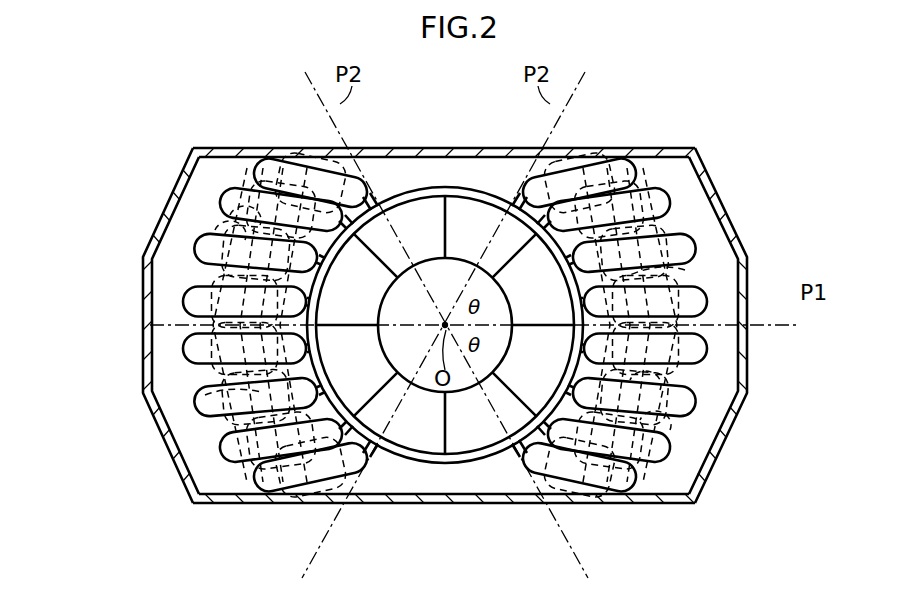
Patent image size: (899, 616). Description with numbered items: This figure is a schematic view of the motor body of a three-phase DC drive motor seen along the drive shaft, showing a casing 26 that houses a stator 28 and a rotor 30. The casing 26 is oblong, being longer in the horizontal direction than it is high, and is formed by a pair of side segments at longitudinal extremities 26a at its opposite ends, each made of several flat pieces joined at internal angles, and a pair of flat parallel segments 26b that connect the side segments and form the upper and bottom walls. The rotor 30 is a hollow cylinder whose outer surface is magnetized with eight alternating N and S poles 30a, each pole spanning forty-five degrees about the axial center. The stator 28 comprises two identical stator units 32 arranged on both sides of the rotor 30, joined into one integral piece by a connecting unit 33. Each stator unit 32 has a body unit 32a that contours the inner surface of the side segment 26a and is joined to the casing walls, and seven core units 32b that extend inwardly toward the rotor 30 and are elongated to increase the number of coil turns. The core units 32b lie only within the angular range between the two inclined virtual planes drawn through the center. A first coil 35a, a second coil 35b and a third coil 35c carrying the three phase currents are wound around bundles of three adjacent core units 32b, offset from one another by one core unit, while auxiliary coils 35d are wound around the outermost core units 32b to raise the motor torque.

The casing 26 is at (455, 326).
The side segment at longitudinal extremity 26a is at (175, 205).
The parallel segment 26b is at (612, 150).
The stator 28 is at (443, 321).
The rotor 30 is at (426, 188).
The pole 30a is at (390, 203).
The stator unit 32 is at (163, 345).
The body unit 32a is at (195, 218).
The core unit 32b is at (290, 288).
The connecting unit 33 is at (497, 482).
The first coil 35a is at (250, 418).
The second coil 35b is at (240, 398).
The third coil 35c is at (205, 262).
The auxiliary coil 35d is at (250, 185).